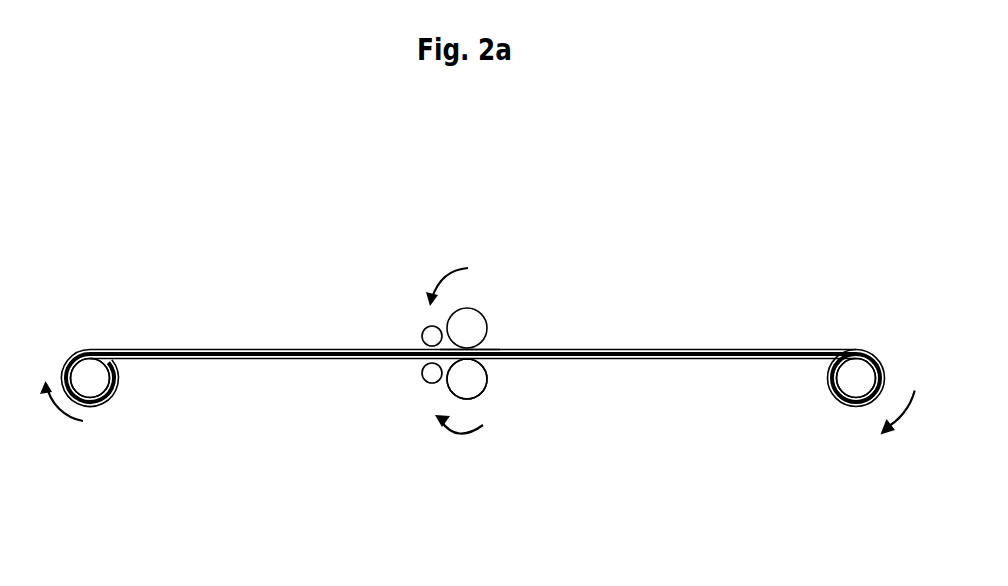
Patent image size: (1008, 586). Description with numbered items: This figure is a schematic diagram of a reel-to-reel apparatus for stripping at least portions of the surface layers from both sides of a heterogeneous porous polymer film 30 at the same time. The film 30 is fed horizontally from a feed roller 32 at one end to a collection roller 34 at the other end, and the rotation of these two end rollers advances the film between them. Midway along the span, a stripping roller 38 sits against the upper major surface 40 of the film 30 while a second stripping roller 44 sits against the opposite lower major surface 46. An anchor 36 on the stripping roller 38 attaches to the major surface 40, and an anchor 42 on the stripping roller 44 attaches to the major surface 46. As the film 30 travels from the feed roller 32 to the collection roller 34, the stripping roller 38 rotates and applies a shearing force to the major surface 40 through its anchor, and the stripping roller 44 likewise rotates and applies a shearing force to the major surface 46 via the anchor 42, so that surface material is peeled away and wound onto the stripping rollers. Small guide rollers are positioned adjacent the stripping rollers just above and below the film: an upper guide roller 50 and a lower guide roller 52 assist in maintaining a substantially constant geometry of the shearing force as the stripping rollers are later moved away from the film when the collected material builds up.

The porous polymer film 30 is at (259, 328).
The feed roller 32 is at (90, 378).
The collection roller 34 is at (856, 378).
The anchor 36 is at (471, 348).
The stripping roller 38 is at (467, 328).
The major surface 40 is at (195, 348).
The anchor 42 is at (471, 360).
The stripping roller 44 is at (467, 380).
The major surface 46 is at (212, 362).
The guide roller 50 is at (430, 336).
The lower guide roller 52 is at (430, 372).